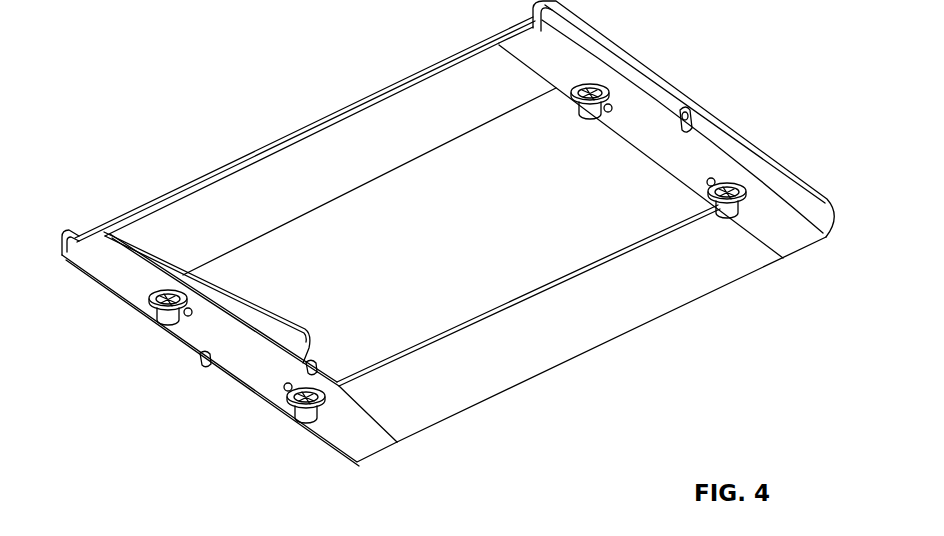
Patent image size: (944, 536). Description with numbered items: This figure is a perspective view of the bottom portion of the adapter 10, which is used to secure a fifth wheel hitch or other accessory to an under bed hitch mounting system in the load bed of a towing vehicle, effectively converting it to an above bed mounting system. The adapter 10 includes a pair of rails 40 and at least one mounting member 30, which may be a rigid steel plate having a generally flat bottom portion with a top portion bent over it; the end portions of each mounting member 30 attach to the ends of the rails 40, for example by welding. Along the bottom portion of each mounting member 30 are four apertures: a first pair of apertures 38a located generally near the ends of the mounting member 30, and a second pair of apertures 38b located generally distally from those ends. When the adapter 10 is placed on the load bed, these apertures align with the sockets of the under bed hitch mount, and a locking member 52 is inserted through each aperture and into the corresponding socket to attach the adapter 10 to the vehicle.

The adapter 10 is at (203, 56).
The mounting member 30 is at (616, 59).
The rail 40 is at (367, 127).
The first pair of apertures 38a is at (571, 92).
The second pair of apertures 38b is at (608, 113).
The locking member 52 is at (589, 119).